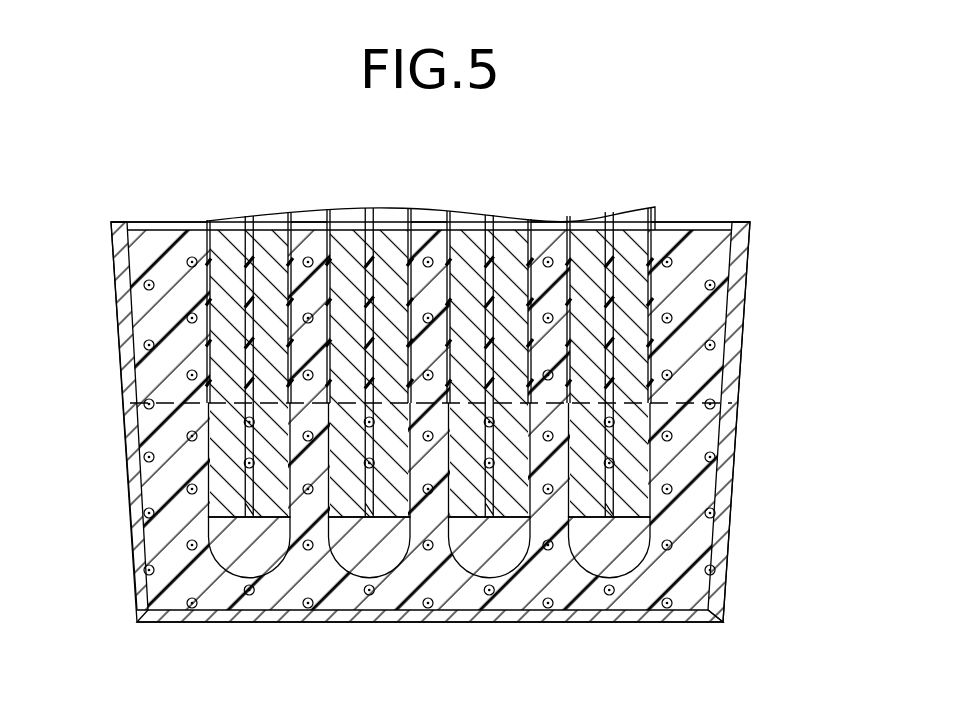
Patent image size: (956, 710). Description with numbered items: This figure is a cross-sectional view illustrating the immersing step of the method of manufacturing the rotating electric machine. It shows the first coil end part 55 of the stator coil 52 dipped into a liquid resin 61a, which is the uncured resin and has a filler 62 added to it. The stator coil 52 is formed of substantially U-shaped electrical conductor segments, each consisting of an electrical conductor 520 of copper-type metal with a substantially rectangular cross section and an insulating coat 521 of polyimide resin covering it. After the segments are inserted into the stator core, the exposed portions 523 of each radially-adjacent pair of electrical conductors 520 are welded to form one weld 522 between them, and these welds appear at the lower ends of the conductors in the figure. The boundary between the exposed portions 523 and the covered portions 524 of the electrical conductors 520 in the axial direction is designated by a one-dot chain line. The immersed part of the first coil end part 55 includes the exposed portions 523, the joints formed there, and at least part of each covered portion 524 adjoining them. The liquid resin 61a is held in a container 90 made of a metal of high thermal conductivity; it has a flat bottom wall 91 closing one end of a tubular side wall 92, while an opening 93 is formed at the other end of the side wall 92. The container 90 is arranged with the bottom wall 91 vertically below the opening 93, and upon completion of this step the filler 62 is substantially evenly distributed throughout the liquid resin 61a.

The first coil end part 55 is at (689, 179).
The stator coil 52 is at (655, 207).
The electrical conductor 520 is at (645, 355).
The insulating coat 521 is at (390, 218).
The weld 522 is at (258, 562).
The exposed portion 523 is at (205, 465).
The covered portion 524 is at (205, 325).
The liquid resin 61a is at (163, 248).
The filler 62 is at (712, 286).
The container 90 is at (728, 572).
The bottom wall 91 is at (221, 612).
The side wall 92 is at (127, 402).
The opening 93 is at (130, 222).